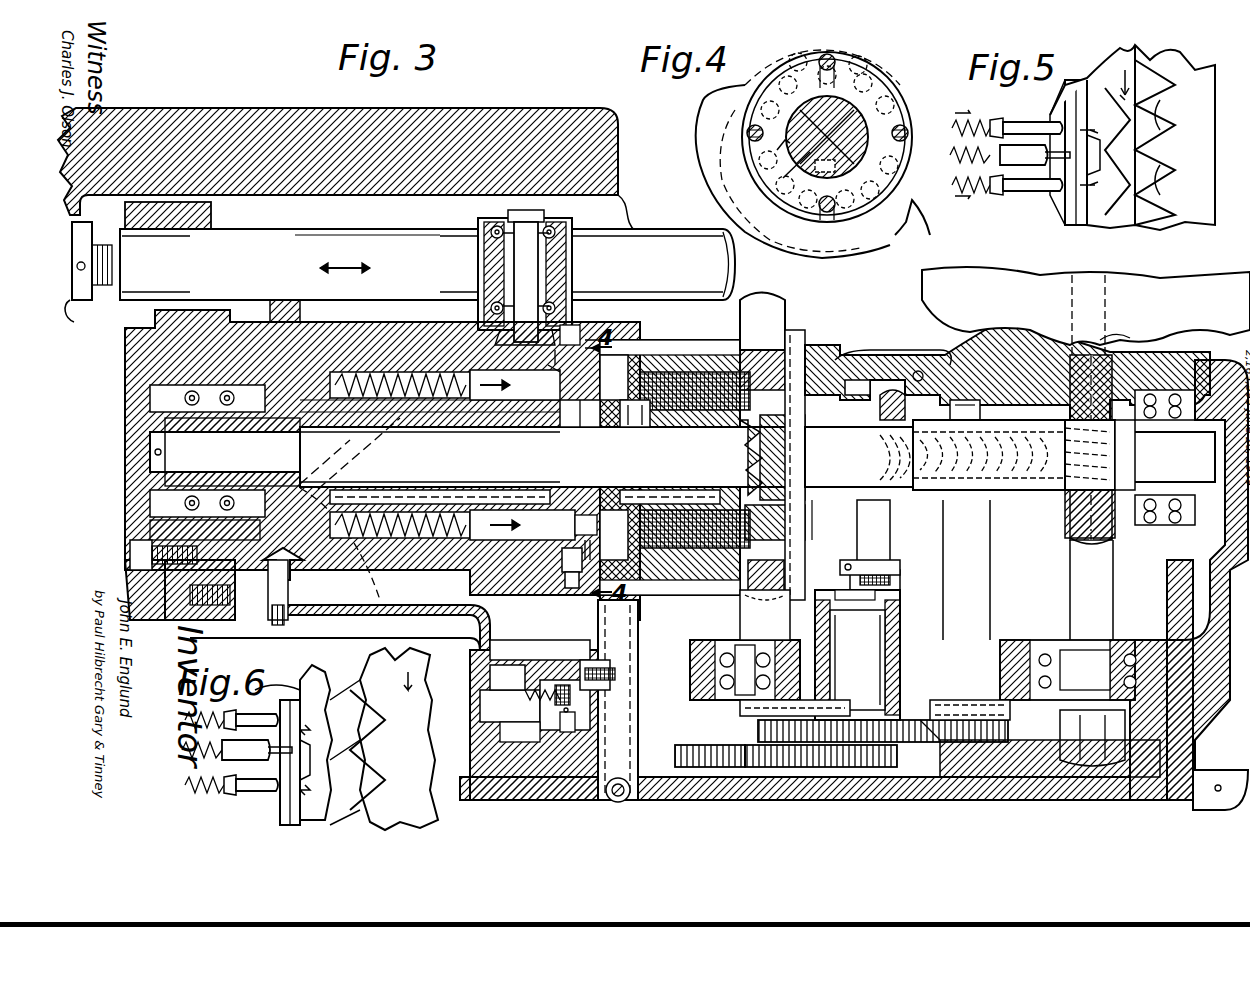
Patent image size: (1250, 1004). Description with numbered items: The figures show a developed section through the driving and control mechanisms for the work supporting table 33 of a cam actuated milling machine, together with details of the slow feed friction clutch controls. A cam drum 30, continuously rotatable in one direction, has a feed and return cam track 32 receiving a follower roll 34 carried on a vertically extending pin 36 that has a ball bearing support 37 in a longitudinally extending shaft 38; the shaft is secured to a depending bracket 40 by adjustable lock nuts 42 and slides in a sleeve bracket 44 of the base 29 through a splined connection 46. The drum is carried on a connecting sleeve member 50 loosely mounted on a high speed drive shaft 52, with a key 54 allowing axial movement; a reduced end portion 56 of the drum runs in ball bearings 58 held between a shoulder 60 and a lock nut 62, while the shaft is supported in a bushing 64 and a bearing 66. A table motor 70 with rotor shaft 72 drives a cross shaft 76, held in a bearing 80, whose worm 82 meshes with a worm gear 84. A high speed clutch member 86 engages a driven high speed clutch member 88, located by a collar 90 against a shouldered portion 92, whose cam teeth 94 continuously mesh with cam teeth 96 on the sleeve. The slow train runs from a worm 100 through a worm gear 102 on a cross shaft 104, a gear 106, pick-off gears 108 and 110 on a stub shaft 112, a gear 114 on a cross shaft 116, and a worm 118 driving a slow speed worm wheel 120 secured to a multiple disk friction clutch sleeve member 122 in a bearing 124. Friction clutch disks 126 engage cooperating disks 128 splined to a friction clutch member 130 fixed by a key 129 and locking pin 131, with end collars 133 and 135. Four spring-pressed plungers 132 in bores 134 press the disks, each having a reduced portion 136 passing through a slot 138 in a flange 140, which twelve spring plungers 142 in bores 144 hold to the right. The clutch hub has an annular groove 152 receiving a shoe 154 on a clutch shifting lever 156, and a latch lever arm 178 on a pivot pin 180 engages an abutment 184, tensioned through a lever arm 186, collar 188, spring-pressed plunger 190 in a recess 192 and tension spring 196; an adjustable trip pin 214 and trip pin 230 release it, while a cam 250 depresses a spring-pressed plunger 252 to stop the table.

In FIG. 3, the base 29 is at (732, 600).
In FIG. 3, the cam drum 30 is at (372, 324).
In FIG. 4, the cam drum 30 is at (700, 114).
In FIG. 3, the feed and return cam track 32 is at (322, 434).
In FIG. 4, the feed and return cam track 32 is at (710, 88).
In FIG. 3, the work supporting table 33 is at (246, 120).
In FIG. 3, the follower roll 34 is at (518, 292).
In FIG. 3, the vertically extending pin 36 is at (560, 258).
In FIG. 3, the ball bearing support 37 is at (492, 232).
In FIG. 3, the longitudinally extending shaft 38 is at (352, 240).
In FIG. 3, the depending bracket 40 is at (95, 430).
In FIG. 3, the adjustable lock nuts 42 is at (85, 240).
In FIG. 3, the sleeve bracket 44 is at (208, 212).
In FIG. 3, the splined connection 46 is at (290, 240).
In FIG. 3, the connecting sleeve member 50 is at (510, 418).
In FIG. 4, the connecting sleeve member 50 is at (832, 104).
In FIG. 5, the connecting sleeve member 50 is at (1128, 70).
In FIG. 6, the connecting sleeve member 50 is at (333, 680).
In FIG. 3, the high speed drive shaft 52 is at (160, 448).
In FIG. 4, the high speed drive shaft 52 is at (830, 172).
In FIG. 3, the key 54 is at (445, 498).
In FIG. 3, the reduced end portion 56 is at (152, 428).
In FIG. 3, the ball bearings 58 is at (182, 505).
In FIG. 3, the shoulder 60 is at (245, 410).
In FIG. 3, the lock nut 62 is at (150, 398).
In FIG. 3, the bushing 64 is at (152, 475).
In FIG. 3, the bearing 66 is at (1134, 455).
In FIG. 3, the table motor 70 is at (1062, 292).
In FIG. 3, the rotor shaft 72 is at (1100, 336).
In FIG. 3, the cross shaft 76 is at (1075, 368).
In FIG. 3, the bearing 80 is at (1125, 665).
In FIG. 3, the worm 82 is at (1062, 485).
In FIG. 3, the worm gear 84 is at (1085, 545).
In FIG. 3, the high speed clutch member 86 is at (836, 358).
In FIG. 3, the driven high speed clutch member 88 is at (826, 365).
In FIG. 5, the driven high speed clutch member 88 is at (1175, 58).
In FIG. 6, the driven high speed clutch member 88 is at (416, 812).
In FIG. 3, the collar 90 is at (836, 368).
In FIG. 3, the shouldered portion 92 is at (812, 440).
In FIG. 3, the cam teeth 94 is at (742, 460).
In FIG. 5, the cam teeth 94 is at (1160, 130).
In FIG. 6, the cam teeth 94 is at (372, 670).
In FIG. 3, the cam teeth 96 is at (742, 425).
In FIG. 5, the cam teeth 96 is at (1158, 92).
In FIG. 6, the cam teeth 96 is at (336, 690).
In FIG. 3, the worm 100 is at (960, 495).
In FIG. 3, the worm gear 102 is at (1058, 428).
In FIG. 3, the cross shaft 104 is at (968, 400).
In FIG. 3, the gear 106 is at (1008, 735).
In FIG. 3, the pick-off gear 108 is at (858, 710).
In FIG. 3, the pick-off gear 110 is at (925, 768).
In FIG. 3, the stub shaft 112 is at (880, 625).
In FIG. 3, the gear 114 is at (690, 770).
In FIG. 3, the cross shaft 116 is at (786, 318).
In FIG. 3, the worm 118 is at (866, 457).
In FIG. 3, the slow speed worm wheel 120 is at (795, 330).
In FIG. 3, the multiple disk friction clutch sleeve member 122 is at (688, 300).
In FIG. 3, the bearing 124 is at (758, 575).
In FIG. 3, the friction clutch disks 126 is at (670, 510).
In FIG. 3, the cooperating disks 128 is at (640, 420).
In FIG. 3, the key 129 is at (670, 497).
In FIG. 3, the friction clutch member 130 is at (688, 410).
In FIG. 3, the locking pin 131 is at (445, 385).
In FIG. 3, the spring-pressed plungers 132 is at (580, 560).
In FIG. 5, the spring-pressed plungers 132 is at (1010, 160).
In FIG. 6, the spring-pressed plungers 132 is at (255, 760).
In FIG. 3, the collar 133 is at (588, 337).
In FIG. 5, the collar 133 is at (1100, 155).
In FIG. 6, the collar 133 is at (315, 750).
In FIG. 3, the axially extending bores 134 is at (432, 580).
In FIG. 3, the collar 135 is at (819, 520).
In FIG. 3, the reduced portion 136 is at (585, 567).
In FIG. 4, the reduced portion 136 is at (826, 54).
In FIG. 5, the reduced portion 136 is at (1050, 140).
In FIG. 6, the reduced portion 136 is at (315, 715).
In FIG. 3, the slot 138 is at (620, 505).
In FIG. 4, the slot 138 is at (833, 58).
In FIG. 5, the slot 138 is at (1048, 122).
In FIG. 6, the slot 138 is at (310, 768).
In FIG. 3, the flange 140 is at (585, 510).
In FIG. 4, the flange 140 is at (825, 139).
In FIG. 5, the flange 140 is at (1072, 226).
In FIG. 6, the flange 140 is at (283, 708).
In FIG. 3, the spring plungers 142 is at (566, 424).
In FIG. 4, the spring plungers 142 is at (800, 70).
In FIG. 5, the spring plungers 142 is at (995, 118).
In FIG. 6, the spring plungers 142 is at (222, 720).
In FIG. 3, the axially extending bores 144 is at (448, 424).
In FIG. 3, the annular groove 152 is at (907, 405).
In FIG. 3, the shoe 154 is at (885, 520).
In FIG. 3, the clutch shifting lever 156 is at (890, 560).
In FIG. 3, the latch lever arm 178 is at (615, 670).
In FIG. 3, the pivot pin 180 is at (610, 765).
In FIG. 3, the abutment 184 is at (625, 705).
In FIG. 3, the lever arm 186 is at (600, 745).
In FIG. 3, the collar 188 is at (567, 731).
In FIG. 3, the spring-pressed plunger 190 is at (510, 690).
In FIG. 3, the recess 192 is at (527, 722).
In FIG. 3, the tension spring 196 is at (540, 740).
In FIG. 3, the adjustable trip pin 214 is at (600, 668).
In FIG. 3, the trip pin 230 is at (585, 590).
In FIG. 3, the cam 250 is at (284, 305).
In FIG. 3, the spring-pressed plunger 252 is at (295, 598).